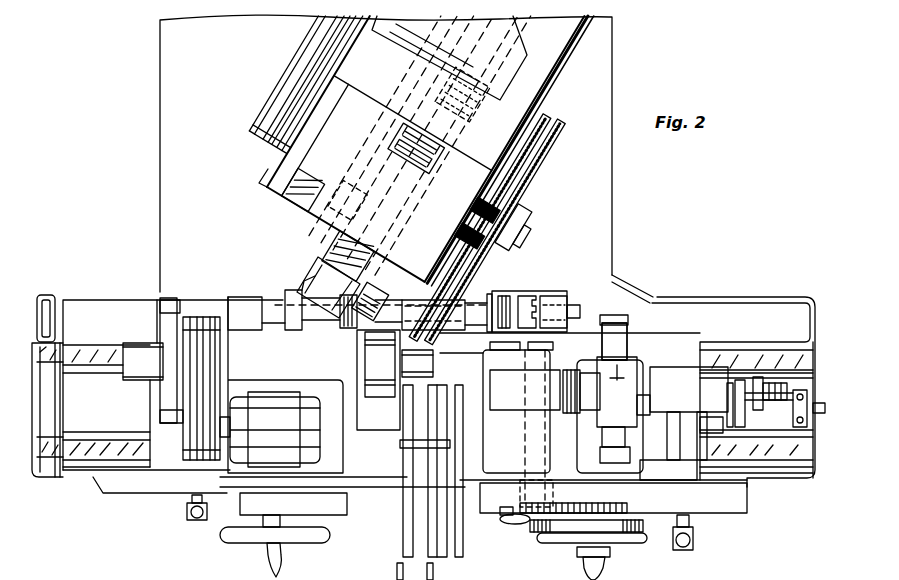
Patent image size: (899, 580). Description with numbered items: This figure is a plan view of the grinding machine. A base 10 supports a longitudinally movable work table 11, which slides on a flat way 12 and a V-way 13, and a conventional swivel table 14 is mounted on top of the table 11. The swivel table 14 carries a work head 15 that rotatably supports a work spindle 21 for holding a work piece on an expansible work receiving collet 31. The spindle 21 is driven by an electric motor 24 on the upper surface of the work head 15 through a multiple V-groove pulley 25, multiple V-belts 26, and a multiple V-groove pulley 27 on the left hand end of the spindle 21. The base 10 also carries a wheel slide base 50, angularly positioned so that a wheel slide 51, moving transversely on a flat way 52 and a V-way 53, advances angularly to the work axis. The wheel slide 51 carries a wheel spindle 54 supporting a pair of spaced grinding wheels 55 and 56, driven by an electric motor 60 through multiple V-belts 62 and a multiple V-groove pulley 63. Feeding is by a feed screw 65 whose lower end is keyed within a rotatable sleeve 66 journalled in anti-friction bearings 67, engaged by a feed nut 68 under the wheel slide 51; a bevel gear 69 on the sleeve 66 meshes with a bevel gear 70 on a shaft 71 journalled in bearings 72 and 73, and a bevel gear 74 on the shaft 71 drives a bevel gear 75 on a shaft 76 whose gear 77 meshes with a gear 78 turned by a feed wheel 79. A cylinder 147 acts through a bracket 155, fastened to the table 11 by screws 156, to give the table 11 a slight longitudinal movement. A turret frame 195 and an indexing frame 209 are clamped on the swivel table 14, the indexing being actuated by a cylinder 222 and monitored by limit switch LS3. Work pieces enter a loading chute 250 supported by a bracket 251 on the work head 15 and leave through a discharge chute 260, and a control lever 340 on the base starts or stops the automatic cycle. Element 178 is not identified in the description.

The base 10 is at (48, 480).
The work table 11 is at (160, 470).
The flat way 12 is at (88, 450).
The V-way 13 is at (90, 358).
The swivel table 14 is at (657, 453).
The work head 15 is at (267, 347).
The work spindle 21 is at (378, 380).
The electric motor 24 is at (278, 402).
The multiple V-groove pulley 25 is at (230, 453).
The bracket 251 is at (367, 463).
The multiple V-belts 26 is at (200, 363).
The multiple V-groove pulley 27 is at (182, 333).
The expansible work receiving collet 31 is at (420, 367).
The wheel slide base 50 is at (267, 179).
The wheel slide 51 is at (530, 80).
The flat way 52 is at (287, 197).
The V-way 53 is at (426, 304).
The wheel spindle 54 is at (520, 237).
The grinding wheel 55 is at (543, 110).
The grinding wheel 56 is at (557, 133).
The electric motor 60 is at (517, 45).
The multiple V-belts 62 is at (327, 46).
The multiple V-groove pulley 63 is at (263, 112).
The feed screw 65 is at (397, 133).
The rotatable sleeve 66 is at (330, 235).
The anti-friction bearings 67 is at (340, 183).
The feed nut 68 is at (393, 80).
The bevel gear 69 is at (307, 280).
The bevel gear 70 is at (350, 329).
The rotatable shaft 71 is at (476, 307).
The anti-friction bearing 72 is at (365, 258).
The anti-friction bearing 73 is at (500, 300).
The bevel gear 74 is at (523, 297).
The bevel gear 75 is at (540, 320).
The rotatable shaft 76 is at (520, 431).
The gear 77 is at (490, 517).
The gear 78 is at (627, 508).
The feed wheel 79 is at (647, 543).
The cylinder 147 is at (743, 403).
The bracket 155 is at (684, 423).
The screws 156 is at (712, 423).
The shelf 178 is at (533, 532).
The frame 195 is at (570, 420).
The frame 209 is at (633, 420).
The cylinder 222 is at (617, 337).
The loading chute 250 is at (410, 520).
The work discharge chute 260 is at (433, 533).
The control lever 340 is at (697, 540).
The limit switch LS3 is at (610, 394).